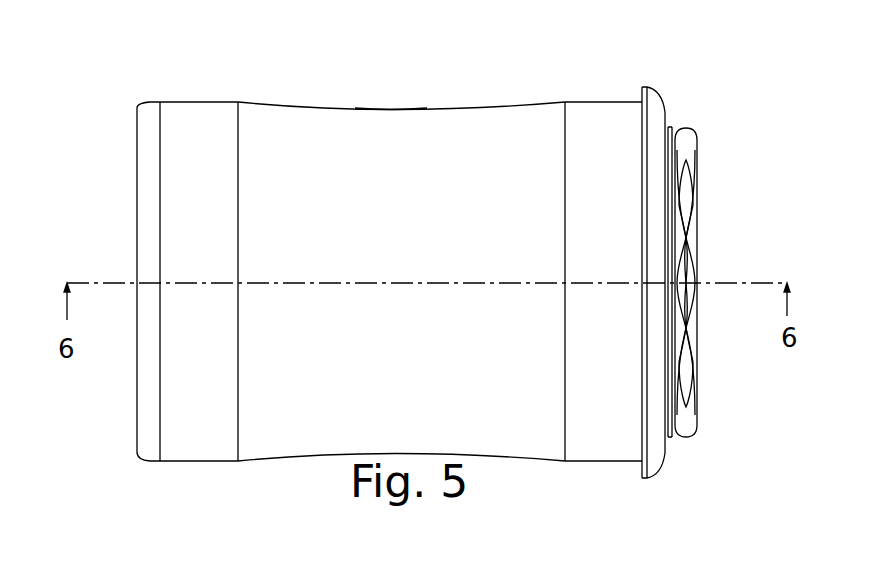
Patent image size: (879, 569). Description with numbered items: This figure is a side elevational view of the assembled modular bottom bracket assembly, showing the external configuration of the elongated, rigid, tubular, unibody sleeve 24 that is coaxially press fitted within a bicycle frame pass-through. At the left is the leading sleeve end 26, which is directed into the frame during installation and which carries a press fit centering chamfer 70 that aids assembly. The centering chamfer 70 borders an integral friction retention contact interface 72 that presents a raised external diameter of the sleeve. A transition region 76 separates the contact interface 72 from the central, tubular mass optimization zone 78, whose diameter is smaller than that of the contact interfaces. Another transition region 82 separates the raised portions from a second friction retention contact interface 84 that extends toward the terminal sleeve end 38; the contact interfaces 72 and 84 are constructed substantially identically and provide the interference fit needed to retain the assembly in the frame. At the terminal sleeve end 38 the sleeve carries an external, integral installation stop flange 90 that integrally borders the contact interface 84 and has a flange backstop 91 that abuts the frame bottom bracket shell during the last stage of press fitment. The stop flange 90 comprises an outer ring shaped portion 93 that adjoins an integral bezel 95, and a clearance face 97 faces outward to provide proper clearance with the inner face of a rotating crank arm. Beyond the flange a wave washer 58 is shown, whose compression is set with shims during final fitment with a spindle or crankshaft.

The tubular sleeve 24 is at (427, 108).
The leading sleeve end 26 is at (158, 101).
The terminal sleeve end 38 is at (640, 97).
The wave washer 58 is at (690, 198).
The press fit centering chamfer 70 is at (150, 137).
The friction retention contact interface 72 is at (205, 133).
The transition region 76 is at (287, 138).
The mass optimization zone 78 is at (478, 163).
The transition region 82 is at (515, 216).
The friction retention contact interface 84 is at (597, 130).
The installation stop flange 90 is at (662, 90).
The flange backstop 91 is at (641, 471).
The outer ring shaped portion 93 is at (642, 313).
The bezel 95 is at (665, 432).
The clearance face 97 is at (668, 125).